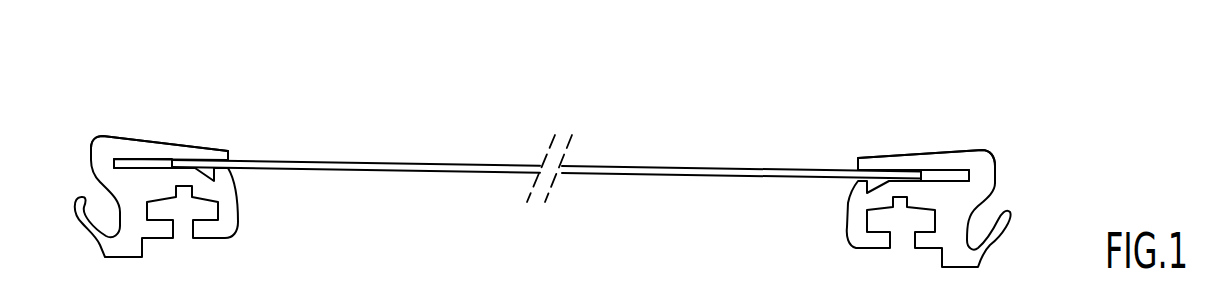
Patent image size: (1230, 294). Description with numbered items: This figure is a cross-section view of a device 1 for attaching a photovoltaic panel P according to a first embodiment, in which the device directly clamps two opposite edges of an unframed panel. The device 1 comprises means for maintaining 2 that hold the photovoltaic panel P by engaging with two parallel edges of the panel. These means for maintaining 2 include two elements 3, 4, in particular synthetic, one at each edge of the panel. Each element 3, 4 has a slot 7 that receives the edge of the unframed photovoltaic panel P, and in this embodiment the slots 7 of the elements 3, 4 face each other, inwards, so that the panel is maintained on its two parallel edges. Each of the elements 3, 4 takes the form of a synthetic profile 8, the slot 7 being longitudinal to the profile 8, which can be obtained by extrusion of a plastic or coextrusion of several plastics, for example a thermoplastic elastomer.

The device for attaching 1 is at (546, 147).
The means for maintaining 2 is at (193, 128).
The element 3 is at (127, 130).
The element 4 is at (961, 138).
The slot 7 is at (151, 159).
The synthetic profile 8 is at (546, 119).
The photovoltaic panel P is at (636, 168).